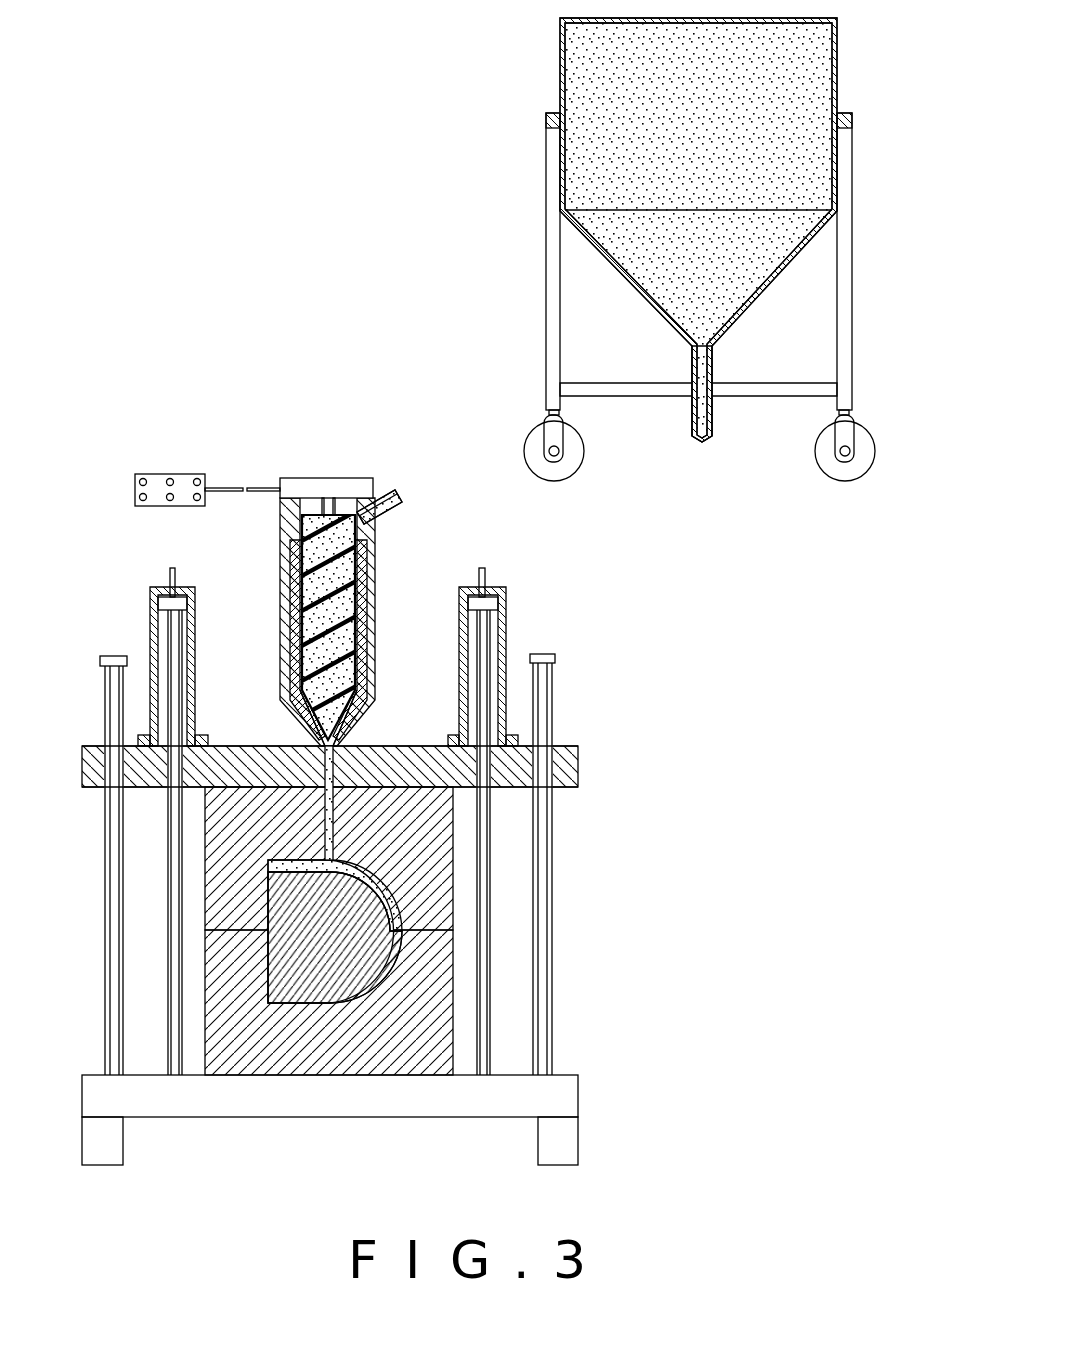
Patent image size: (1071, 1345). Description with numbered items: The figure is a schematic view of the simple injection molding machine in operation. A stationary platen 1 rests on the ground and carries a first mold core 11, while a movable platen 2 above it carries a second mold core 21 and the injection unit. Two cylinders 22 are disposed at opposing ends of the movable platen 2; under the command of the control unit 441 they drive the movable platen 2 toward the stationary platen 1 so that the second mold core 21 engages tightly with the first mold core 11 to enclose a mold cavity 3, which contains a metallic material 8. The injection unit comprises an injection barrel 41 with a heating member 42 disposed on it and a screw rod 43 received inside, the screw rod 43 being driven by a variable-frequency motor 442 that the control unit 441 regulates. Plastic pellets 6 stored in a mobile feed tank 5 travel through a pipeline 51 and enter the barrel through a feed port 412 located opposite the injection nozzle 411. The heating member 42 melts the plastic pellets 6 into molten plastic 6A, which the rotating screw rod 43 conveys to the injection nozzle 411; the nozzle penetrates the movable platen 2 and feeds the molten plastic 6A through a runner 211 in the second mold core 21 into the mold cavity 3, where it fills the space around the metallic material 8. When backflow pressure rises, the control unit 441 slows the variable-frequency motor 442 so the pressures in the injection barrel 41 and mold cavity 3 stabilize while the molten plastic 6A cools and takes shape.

The stationary platen 1 is at (82, 1098).
The movable platen 2 is at (578, 762).
The mold cavity 3 is at (267, 968).
The mobile feed tank 5 is at (708, 261).
The plastic pellets 6 is at (830, 101).
The molten plastic 6A is at (330, 585).
The metallic material 8 is at (345, 947).
The first mold core 11 is at (455, 1032).
The second mold core 21 is at (455, 817).
The cylinders 22 is at (150, 592).
The injection barrel 41 is at (354, 660).
The heating member 42 is at (292, 556).
The screw rod 43 is at (453, 665).
The pipeline 51 is at (712, 416).
The runner 211 is at (320, 823).
The injection nozzle 411 is at (280, 732).
The feed port 412 is at (380, 492).
The control unit 441 is at (196, 473).
The variable-frequency motor 442 is at (302, 485).